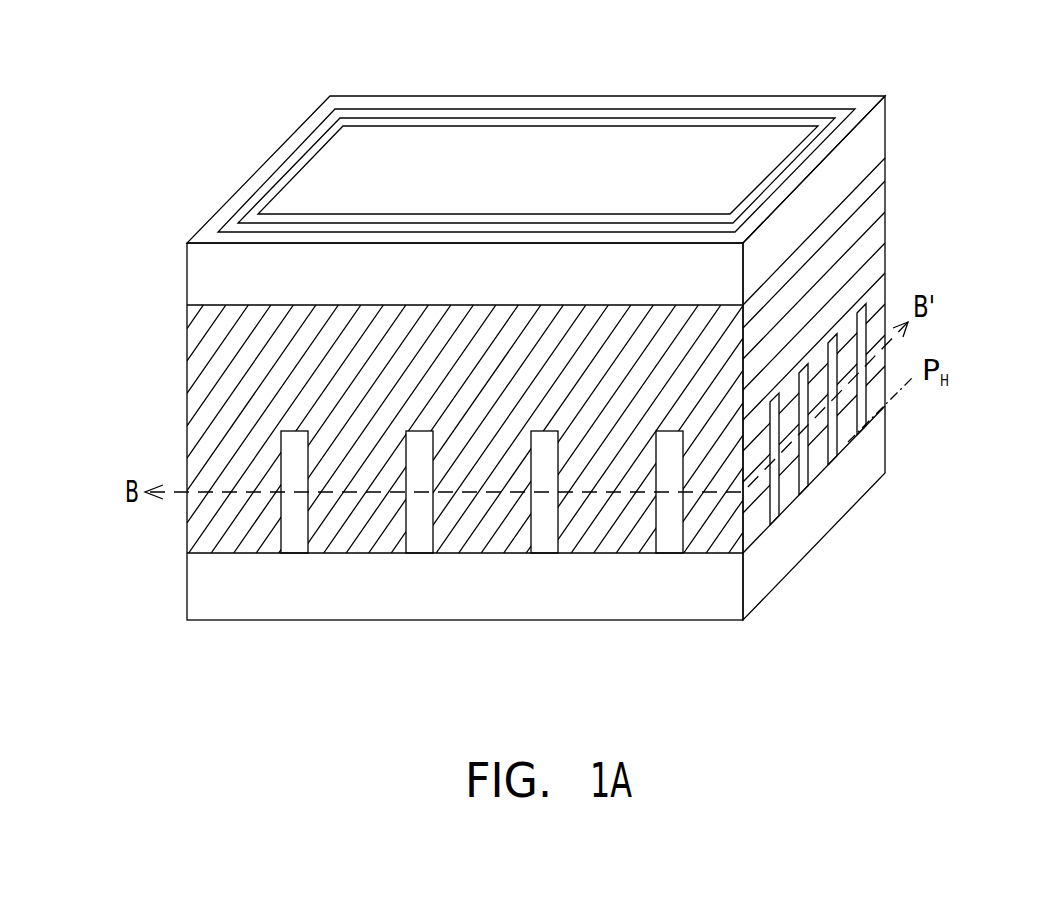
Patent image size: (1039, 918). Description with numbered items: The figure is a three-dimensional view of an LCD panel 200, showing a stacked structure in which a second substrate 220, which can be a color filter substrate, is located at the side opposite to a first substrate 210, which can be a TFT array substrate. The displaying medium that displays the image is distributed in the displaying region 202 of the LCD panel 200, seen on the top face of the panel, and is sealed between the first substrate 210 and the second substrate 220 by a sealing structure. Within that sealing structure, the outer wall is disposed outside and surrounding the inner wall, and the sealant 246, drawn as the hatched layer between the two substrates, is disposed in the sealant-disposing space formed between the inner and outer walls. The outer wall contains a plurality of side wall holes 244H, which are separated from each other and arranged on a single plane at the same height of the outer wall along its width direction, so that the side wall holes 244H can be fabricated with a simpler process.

The LCD panel 200 is at (910, 660).
The displaying region 202 is at (567, 173).
The first substrate 210 is at (875, 447).
The second substrate 220 is at (873, 130).
The sealant 246 is at (878, 311).
The side wall holes 244H is at (543, 507).